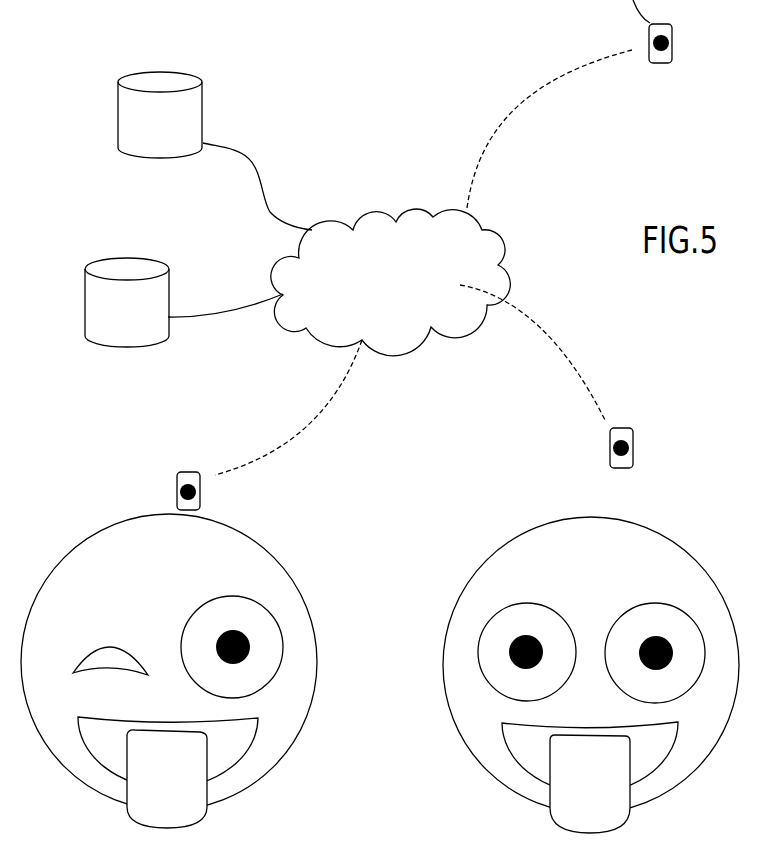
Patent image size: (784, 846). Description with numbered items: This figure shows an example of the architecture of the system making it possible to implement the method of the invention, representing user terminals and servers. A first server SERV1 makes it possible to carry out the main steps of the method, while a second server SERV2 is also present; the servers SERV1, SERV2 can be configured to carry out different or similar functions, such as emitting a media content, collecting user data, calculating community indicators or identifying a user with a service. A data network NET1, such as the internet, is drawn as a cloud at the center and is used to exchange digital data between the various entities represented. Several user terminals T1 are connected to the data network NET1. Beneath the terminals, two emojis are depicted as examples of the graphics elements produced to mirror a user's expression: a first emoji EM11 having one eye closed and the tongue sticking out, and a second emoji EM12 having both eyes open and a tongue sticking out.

The first server SERV1 is at (124, 95).
The second server SERV2 is at (97, 290).
The data network NET1 is at (390, 282).
The user terminal T1 is at (183, 477).
The first emoji EM11 is at (312, 608).
The second emoji EM12 is at (440, 728).